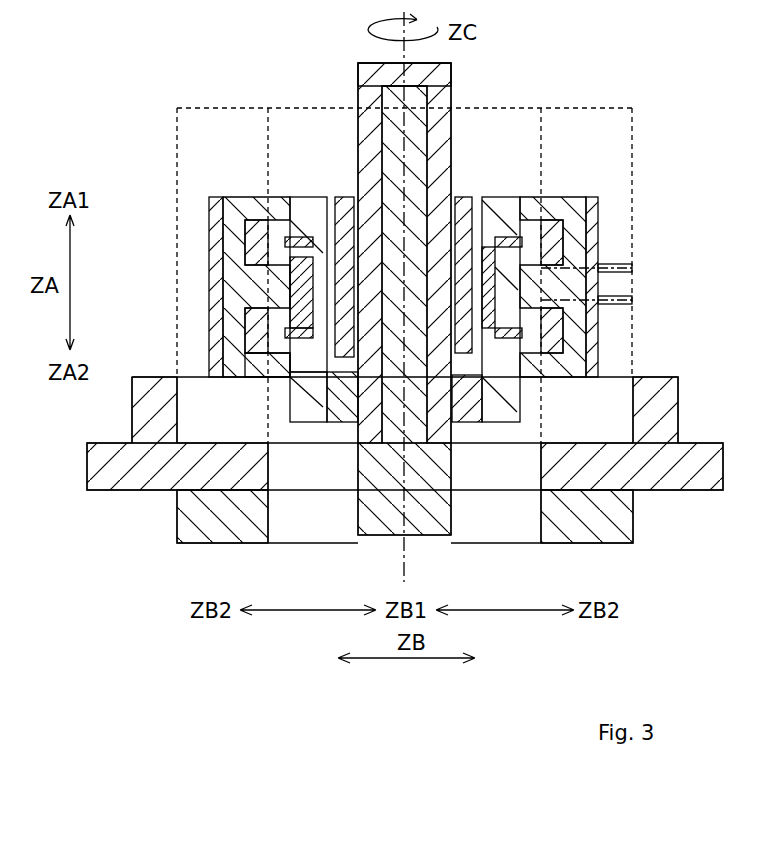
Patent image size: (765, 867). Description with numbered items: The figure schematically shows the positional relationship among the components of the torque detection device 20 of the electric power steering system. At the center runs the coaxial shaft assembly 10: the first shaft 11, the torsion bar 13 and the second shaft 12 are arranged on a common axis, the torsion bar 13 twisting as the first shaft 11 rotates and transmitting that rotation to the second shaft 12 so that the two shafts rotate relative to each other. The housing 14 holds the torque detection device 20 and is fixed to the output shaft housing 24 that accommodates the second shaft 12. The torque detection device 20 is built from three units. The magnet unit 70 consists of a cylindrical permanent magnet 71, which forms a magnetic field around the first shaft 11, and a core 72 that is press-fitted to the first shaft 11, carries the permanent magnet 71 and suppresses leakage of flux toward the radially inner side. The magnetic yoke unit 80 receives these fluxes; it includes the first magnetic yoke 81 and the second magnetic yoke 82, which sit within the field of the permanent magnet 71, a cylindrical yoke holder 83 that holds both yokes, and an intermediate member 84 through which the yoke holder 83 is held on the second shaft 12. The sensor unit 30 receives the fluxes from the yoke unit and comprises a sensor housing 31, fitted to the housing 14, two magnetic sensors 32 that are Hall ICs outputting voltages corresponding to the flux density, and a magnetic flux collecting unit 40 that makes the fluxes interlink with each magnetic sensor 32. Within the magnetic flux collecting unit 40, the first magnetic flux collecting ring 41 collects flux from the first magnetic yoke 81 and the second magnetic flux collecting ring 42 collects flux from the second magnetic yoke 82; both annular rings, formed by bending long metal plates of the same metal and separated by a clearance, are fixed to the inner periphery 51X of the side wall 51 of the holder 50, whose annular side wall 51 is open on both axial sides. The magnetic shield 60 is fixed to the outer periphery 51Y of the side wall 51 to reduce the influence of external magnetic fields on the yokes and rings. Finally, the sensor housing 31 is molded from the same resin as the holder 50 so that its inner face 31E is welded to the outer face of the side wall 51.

The shaft 10 is at (418, 310).
The first shaft 11 is at (385, 63).
The second shaft 12 is at (432, 537).
The torsion bar 13 is at (382, 142).
The housing 14 is at (113, 492).
The torque detection device 20 is at (163, 92).
The output shaft housing 24 is at (636, 511).
The sensor unit 30 is at (166, 221).
The sensor housing 31 is at (175, 150).
The inner face 31E is at (598, 206).
The magnetic sensor 32 is at (632, 284).
The magnetic flux collecting unit 40 is at (577, 300).
The first magnetic flux collecting ring 41 is at (558, 222).
The second magnetic flux collecting ring 42 is at (557, 320).
The holder 50 is at (570, 197).
The side wall 51 is at (222, 278).
The inner periphery 51X is at (251, 378).
The outer periphery 51Y is at (222, 322).
The magnetic shield 60 is at (600, 360).
The magnet unit 70 is at (491, 271).
The permanent magnet 71 is at (470, 197).
The core 72 is at (456, 197).
The magnetic yoke unit 80 is at (382, 338).
The first magnetic yoke 81 is at (302, 270).
The second magnetic yoke 82 is at (300, 342).
The yoke holder 83 is at (305, 422).
The intermediate member 84 is at (350, 422).